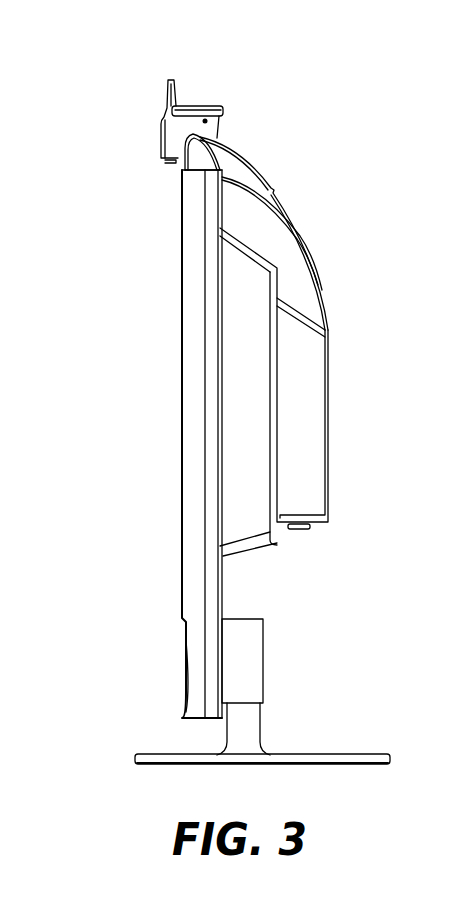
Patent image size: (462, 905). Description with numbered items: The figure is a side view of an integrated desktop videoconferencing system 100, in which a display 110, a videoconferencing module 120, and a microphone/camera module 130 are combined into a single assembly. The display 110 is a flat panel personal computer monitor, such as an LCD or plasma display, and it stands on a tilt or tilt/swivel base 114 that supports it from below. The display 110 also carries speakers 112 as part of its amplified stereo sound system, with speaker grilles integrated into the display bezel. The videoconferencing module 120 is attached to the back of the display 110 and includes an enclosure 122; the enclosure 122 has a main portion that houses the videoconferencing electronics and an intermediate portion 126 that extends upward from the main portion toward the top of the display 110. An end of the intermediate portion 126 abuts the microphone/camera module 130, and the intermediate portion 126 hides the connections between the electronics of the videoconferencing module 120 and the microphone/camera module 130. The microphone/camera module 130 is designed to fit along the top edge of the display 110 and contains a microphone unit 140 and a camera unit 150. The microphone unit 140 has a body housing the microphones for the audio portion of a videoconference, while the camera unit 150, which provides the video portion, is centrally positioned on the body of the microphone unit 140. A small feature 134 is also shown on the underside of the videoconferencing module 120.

The integrated desktop videoconferencing system 100 is at (101, 108).
The display 110 is at (180, 372).
The speakers 112 is at (263, 660).
The tilt or tilt/swivel base 114 is at (310, 753).
The videoconferencing module 120 is at (360, 326).
The enclosure 122 is at (328, 378).
The intermediate portion 126 is at (275, 190).
The microphone/camera module 130 is at (260, 89).
The protrusion 134 is at (300, 530).
The microphone unit 140 is at (220, 138).
The camera unit 150 is at (163, 160).